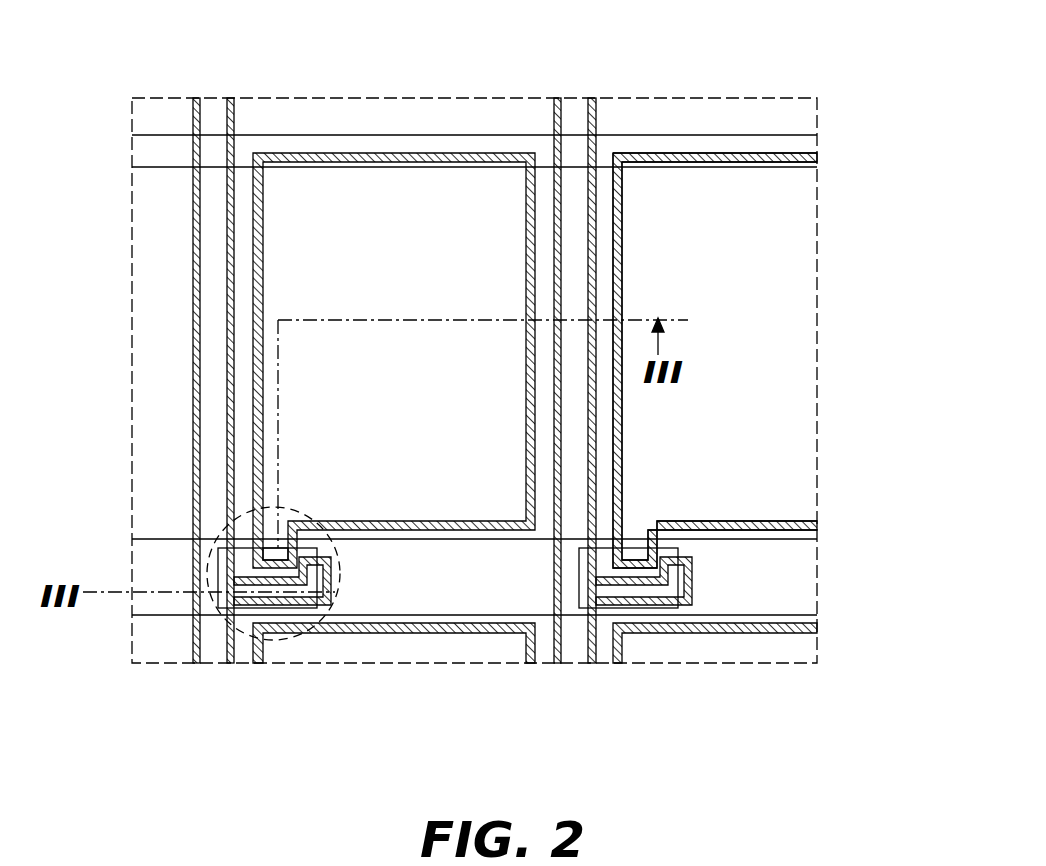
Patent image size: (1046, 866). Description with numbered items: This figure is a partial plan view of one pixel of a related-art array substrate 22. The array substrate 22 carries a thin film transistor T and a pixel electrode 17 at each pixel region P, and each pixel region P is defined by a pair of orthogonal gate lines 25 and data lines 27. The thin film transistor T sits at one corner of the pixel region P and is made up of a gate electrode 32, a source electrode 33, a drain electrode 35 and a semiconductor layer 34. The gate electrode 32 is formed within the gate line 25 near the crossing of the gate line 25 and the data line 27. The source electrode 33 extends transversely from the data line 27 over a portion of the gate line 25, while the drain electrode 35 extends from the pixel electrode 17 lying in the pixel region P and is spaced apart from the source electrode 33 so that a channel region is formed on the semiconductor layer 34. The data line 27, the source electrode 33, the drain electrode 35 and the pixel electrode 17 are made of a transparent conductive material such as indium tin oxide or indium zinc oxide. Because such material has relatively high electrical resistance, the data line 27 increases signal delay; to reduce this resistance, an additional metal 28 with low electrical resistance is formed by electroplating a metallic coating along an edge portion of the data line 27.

The pixel electrode 17 is at (387, 133).
The array substrate 22 is at (824, 301).
The gate line 25 is at (798, 563).
The data line 27 is at (568, 115).
The additional metal 28 is at (227, 98).
The gate electrode 32 is at (607, 562).
The source electrode 33 is at (322, 590).
The semiconductor layer 34 is at (300, 605).
The drain electrode 35 is at (258, 562).
The pixel region P is at (464, 197).
The thin film transistor T is at (207, 565).